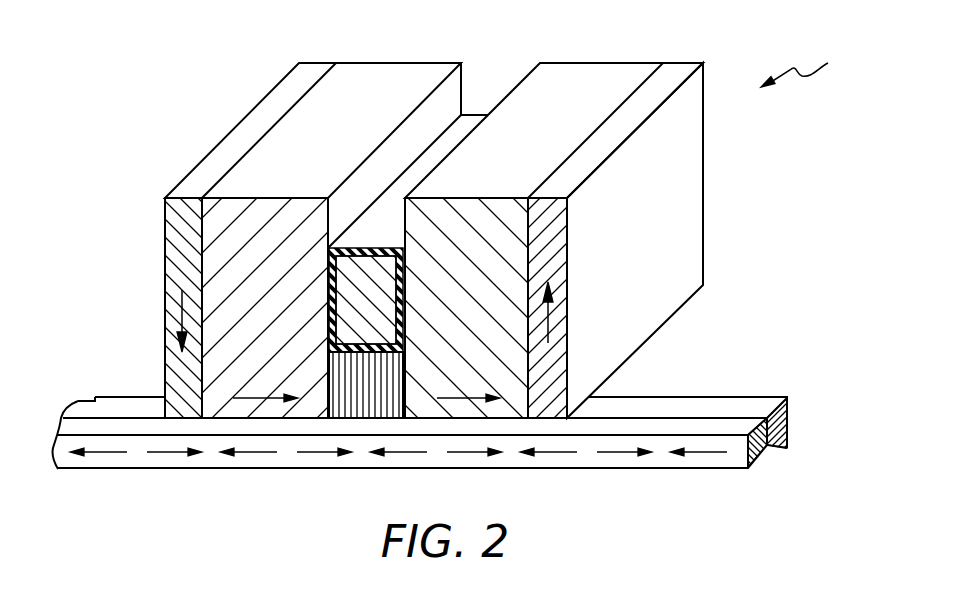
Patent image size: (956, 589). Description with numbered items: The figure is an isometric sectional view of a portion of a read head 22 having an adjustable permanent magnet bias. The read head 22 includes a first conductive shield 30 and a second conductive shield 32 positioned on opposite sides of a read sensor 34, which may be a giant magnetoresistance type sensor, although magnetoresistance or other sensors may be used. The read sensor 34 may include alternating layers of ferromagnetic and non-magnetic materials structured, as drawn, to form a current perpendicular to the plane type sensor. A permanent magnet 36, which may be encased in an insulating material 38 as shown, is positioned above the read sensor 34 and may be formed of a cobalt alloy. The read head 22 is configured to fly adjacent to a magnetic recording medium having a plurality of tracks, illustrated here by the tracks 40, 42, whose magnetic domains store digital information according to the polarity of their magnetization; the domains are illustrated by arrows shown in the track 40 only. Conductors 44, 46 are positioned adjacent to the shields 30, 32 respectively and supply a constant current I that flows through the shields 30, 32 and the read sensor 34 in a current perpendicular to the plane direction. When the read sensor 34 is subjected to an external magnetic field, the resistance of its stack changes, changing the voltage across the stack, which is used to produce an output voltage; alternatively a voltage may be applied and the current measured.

The read head 22 is at (814, 64).
The first conductive shield 30 is at (374, 72).
The second conductive shield 32 is at (599, 70).
The read sensor 34 is at (363, 392).
The permanent magnet 36 is at (362, 273).
The insulating material 38 is at (470, 117).
The track 40 is at (790, 419).
The track 42 is at (787, 447).
The conductor 44 is at (291, 87).
The conductor 46 is at (675, 73).
The constant current I is at (182, 320).